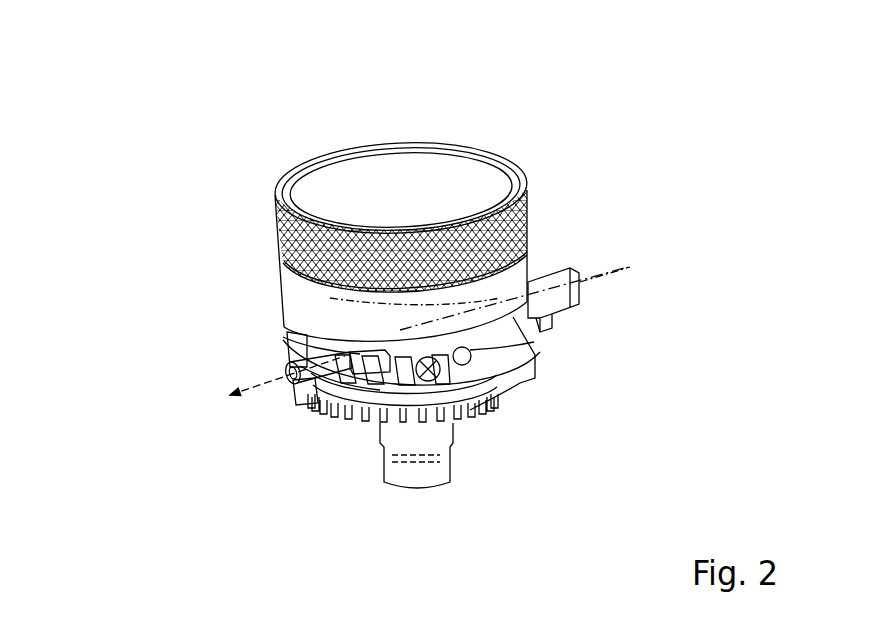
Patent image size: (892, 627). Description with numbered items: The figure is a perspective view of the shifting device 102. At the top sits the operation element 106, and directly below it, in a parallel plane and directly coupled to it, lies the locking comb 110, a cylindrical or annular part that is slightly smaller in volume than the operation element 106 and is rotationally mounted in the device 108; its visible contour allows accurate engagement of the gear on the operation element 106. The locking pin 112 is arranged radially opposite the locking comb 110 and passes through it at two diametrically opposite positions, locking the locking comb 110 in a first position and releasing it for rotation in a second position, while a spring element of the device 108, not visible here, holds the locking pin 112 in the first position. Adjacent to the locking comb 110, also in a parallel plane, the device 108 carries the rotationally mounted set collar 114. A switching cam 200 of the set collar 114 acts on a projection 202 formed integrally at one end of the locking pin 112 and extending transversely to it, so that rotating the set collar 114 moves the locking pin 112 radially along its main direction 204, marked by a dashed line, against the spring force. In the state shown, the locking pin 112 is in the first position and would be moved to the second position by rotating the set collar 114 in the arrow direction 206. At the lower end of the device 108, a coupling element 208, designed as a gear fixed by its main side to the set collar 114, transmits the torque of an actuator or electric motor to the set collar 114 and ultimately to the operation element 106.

The shifting device 102 is at (478, 133).
The operation element 106 is at (280, 228).
The device 108 is at (557, 356).
The locking comb 110 is at (465, 418).
The locking pin 112 is at (330, 417).
The set collar 114 is at (293, 342).
The switching cam 200 is at (280, 355).
The projection 202 is at (307, 397).
The main direction 204 is at (608, 275).
The direction 206 is at (262, 384).
The coupling element 208 is at (485, 407).